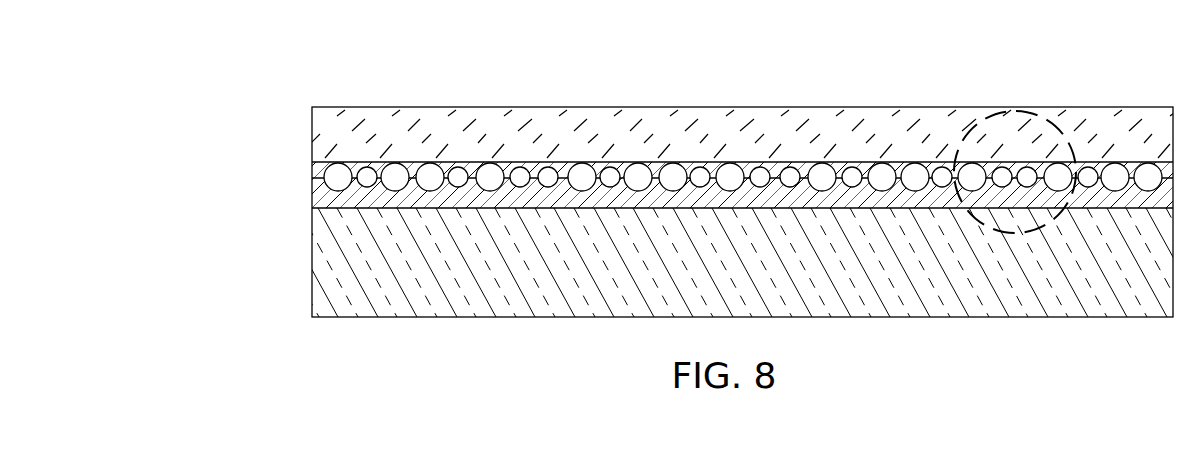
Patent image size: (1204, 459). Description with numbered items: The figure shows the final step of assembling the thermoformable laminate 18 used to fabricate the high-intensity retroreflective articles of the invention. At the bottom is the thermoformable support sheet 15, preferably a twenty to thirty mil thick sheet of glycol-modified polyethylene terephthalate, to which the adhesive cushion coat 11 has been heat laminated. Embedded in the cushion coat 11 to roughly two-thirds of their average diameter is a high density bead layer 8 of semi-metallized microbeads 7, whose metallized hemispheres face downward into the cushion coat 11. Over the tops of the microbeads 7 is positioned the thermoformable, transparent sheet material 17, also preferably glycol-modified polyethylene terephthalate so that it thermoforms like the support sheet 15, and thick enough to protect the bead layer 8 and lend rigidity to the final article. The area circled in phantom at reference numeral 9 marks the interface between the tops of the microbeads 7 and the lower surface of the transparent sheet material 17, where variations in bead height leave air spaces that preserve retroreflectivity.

The thermoformable laminate 18 is at (235, 107).
The transparent sheet material 17 is at (312, 125).
The bead layer 8 is at (314, 167).
The cushion coat 11 is at (312, 199).
The support sheet 15 is at (312, 268).
The microbeads 7 is at (1117, 165).
The circled area 9 is at (1014, 110).